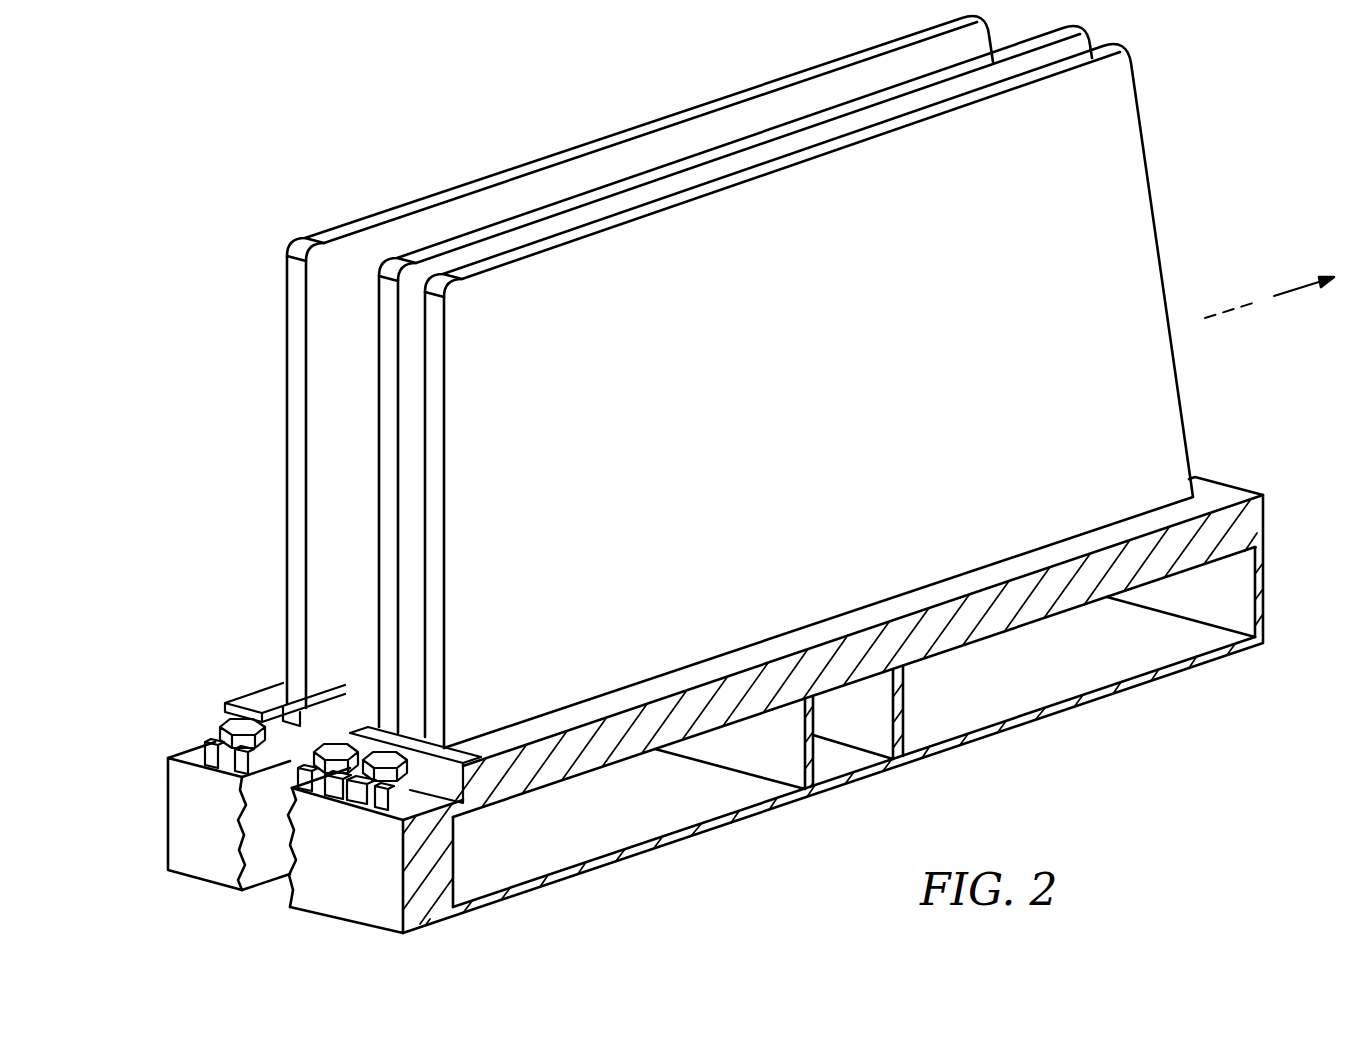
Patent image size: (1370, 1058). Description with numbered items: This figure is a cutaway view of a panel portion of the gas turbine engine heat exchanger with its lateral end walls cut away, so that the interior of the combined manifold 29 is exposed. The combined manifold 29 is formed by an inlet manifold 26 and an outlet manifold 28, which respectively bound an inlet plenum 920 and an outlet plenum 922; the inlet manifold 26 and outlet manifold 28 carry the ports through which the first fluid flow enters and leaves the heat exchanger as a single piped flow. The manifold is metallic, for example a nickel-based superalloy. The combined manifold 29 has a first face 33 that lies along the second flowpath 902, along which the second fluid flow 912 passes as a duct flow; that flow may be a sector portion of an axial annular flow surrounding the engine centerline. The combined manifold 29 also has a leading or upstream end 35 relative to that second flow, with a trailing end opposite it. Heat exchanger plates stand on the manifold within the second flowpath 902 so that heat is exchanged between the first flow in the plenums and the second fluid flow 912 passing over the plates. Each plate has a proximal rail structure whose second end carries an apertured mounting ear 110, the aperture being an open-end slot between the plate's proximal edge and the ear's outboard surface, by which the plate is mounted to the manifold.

The second flowpath 902 is at (1230, 307).
The second fluid flow 912 is at (1305, 278).
The first face 33 is at (1158, 517).
The inlet manifold 26 is at (858, 669).
The inlet plenum 920 is at (1062, 669).
The outlet plenum 922 is at (729, 785).
The combined manifold 29 is at (880, 794).
The outlet manifold 28 is at (670, 859).
The apertured mounting ear 110 is at (414, 796).
The leading end 35 is at (313, 872).